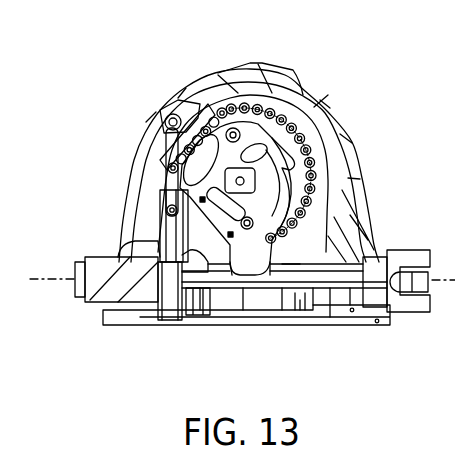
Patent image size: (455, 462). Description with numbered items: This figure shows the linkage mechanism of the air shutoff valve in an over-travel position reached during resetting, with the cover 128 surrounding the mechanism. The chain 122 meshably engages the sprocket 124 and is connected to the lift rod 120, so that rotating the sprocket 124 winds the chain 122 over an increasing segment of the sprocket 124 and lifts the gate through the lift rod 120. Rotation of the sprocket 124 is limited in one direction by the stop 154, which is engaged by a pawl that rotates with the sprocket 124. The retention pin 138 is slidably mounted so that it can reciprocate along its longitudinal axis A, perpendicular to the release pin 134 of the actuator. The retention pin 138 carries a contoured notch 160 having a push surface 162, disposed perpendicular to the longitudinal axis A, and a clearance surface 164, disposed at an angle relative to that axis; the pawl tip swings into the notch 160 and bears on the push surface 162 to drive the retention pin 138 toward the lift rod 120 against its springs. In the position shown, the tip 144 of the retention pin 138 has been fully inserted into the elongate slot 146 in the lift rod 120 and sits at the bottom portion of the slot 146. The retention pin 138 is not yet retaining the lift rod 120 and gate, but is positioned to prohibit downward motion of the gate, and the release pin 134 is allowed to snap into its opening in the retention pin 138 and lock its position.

The cover 128 is at (271, 77).
The stop 154 is at (172, 118).
The lift rod 120 is at (172, 233).
The sprocket 124 is at (285, 153).
The chain 122 is at (310, 182).
The retention pin 138 is at (345, 276).
The elongate slot 146 is at (175, 265).
The tip 144 is at (176, 278).
The push surface 162 is at (240, 268).
The contoured notch 160 is at (273, 268).
The release pin 134 is at (306, 265).
The clearance surface 164 is at (290, 267).
The longitudinal axis A is at (50, 280).